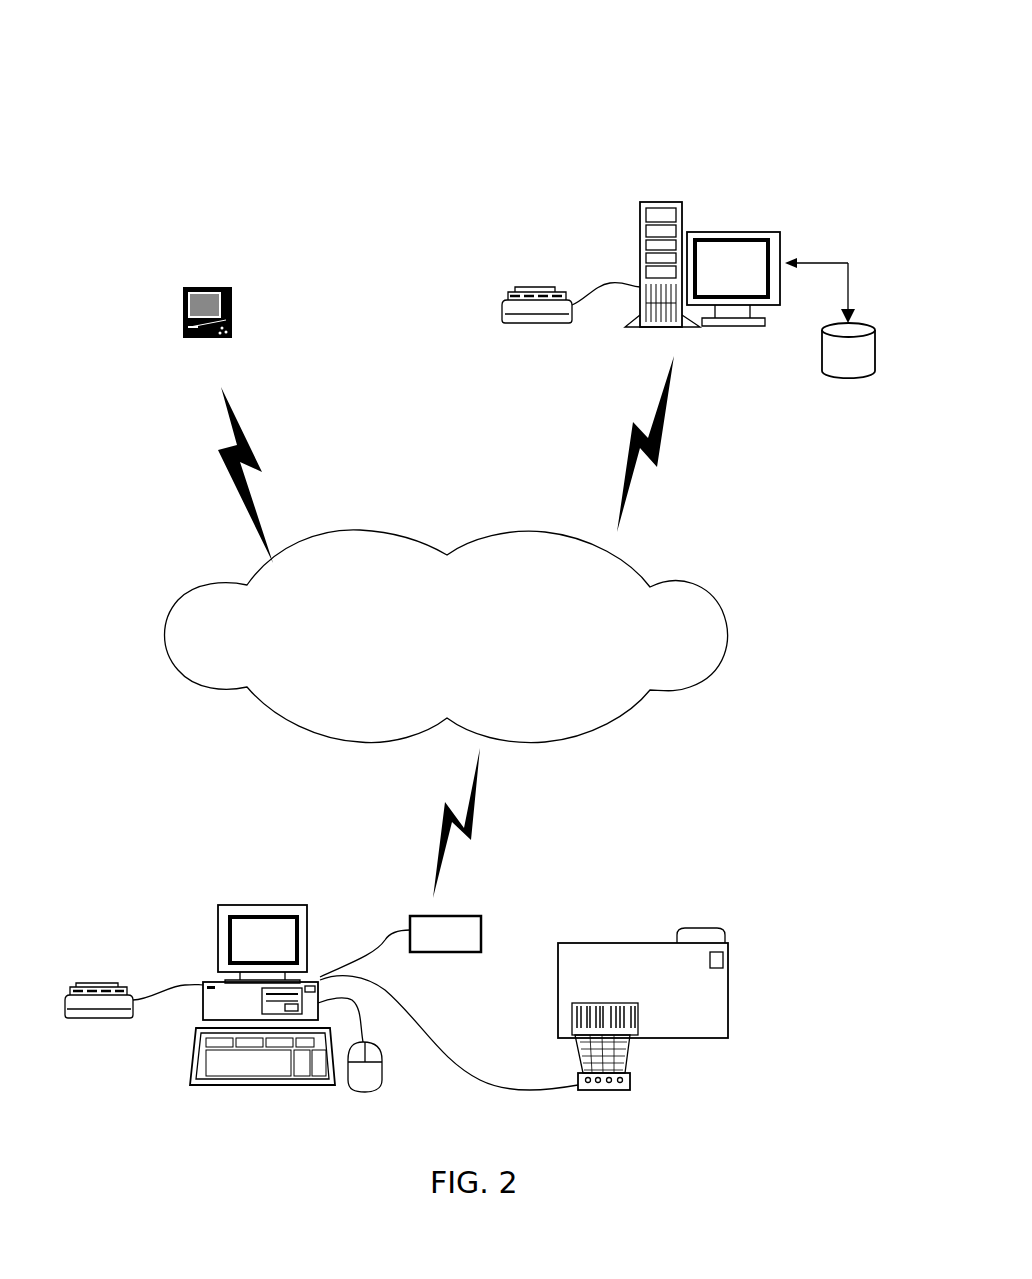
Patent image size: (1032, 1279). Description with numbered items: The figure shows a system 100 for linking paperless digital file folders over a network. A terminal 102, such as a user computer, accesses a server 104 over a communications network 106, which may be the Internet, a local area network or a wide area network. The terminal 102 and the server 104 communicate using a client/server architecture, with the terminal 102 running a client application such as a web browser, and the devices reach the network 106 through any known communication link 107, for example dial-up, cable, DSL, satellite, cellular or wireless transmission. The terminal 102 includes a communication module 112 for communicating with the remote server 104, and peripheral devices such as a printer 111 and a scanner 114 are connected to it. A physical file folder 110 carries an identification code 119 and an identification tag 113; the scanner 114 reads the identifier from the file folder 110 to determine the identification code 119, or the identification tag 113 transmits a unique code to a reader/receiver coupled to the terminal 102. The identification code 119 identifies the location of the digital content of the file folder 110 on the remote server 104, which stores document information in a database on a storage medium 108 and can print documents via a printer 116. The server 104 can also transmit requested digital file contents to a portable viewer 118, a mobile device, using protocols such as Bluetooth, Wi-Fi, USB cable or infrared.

The system 100 is at (462, 178).
The terminal 102 is at (205, 982).
The server 104 is at (640, 262).
The communications network 106 is at (730, 640).
The communication link 107 is at (217, 453).
The storage medium 108 is at (876, 350).
The file folder 110 is at (729, 995).
The printer 111 is at (65, 1000).
The communication module 112 is at (481, 930).
The identification tag 113 is at (724, 958).
The scanner 114 is at (630, 1080).
The printer 116 is at (495, 305).
The portable viewer 118 is at (183, 312).
The identification code 119 is at (636, 1020).